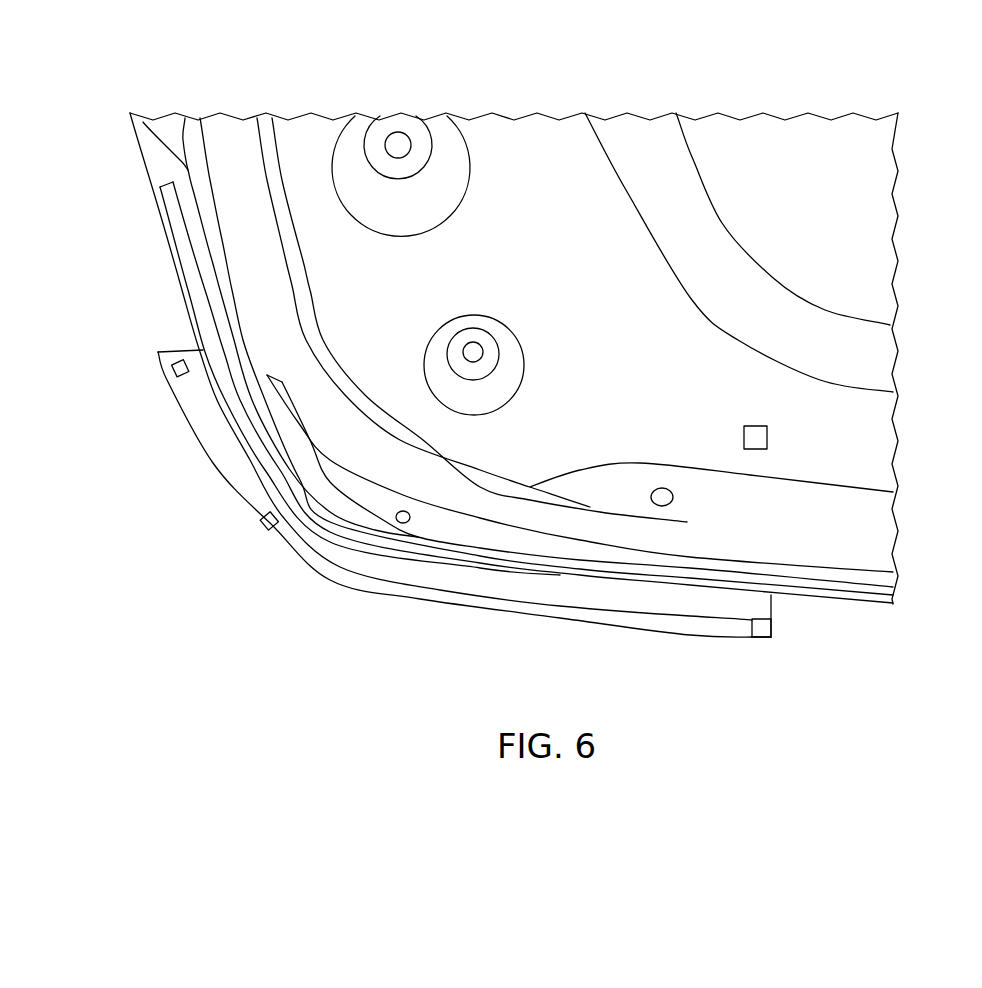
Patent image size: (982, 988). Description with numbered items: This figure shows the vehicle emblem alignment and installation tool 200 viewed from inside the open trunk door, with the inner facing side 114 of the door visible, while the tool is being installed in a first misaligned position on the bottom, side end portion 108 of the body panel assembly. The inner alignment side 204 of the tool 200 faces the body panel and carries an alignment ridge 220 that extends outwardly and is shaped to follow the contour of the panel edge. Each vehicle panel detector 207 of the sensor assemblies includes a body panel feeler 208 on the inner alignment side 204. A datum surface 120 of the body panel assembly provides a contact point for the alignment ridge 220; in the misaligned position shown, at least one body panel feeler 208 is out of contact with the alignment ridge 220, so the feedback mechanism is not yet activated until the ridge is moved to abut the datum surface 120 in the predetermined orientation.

The bottom, side end portion 108 is at (838, 98).
The inner facing side 114 is at (878, 244).
The datum surface 120 is at (332, 512).
The vehicle emblem alignment and installation tool 200 is at (471, 424).
The inner alignment side 204 is at (456, 610).
The vehicle panel detector 207 is at (176, 370).
The body panel feeler 208 is at (471, 506).
The alignment ridge 220 is at (513, 615).